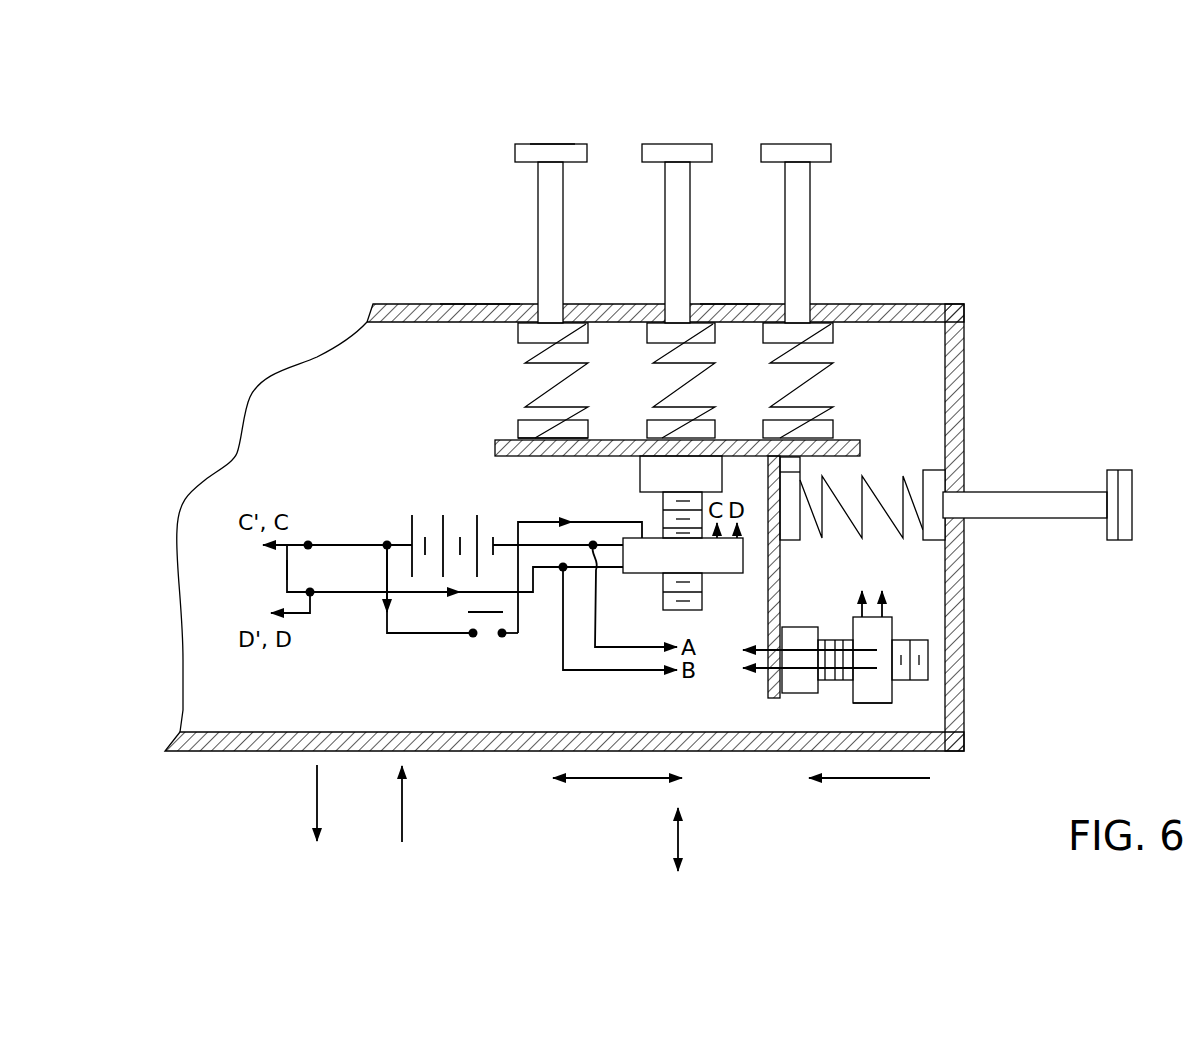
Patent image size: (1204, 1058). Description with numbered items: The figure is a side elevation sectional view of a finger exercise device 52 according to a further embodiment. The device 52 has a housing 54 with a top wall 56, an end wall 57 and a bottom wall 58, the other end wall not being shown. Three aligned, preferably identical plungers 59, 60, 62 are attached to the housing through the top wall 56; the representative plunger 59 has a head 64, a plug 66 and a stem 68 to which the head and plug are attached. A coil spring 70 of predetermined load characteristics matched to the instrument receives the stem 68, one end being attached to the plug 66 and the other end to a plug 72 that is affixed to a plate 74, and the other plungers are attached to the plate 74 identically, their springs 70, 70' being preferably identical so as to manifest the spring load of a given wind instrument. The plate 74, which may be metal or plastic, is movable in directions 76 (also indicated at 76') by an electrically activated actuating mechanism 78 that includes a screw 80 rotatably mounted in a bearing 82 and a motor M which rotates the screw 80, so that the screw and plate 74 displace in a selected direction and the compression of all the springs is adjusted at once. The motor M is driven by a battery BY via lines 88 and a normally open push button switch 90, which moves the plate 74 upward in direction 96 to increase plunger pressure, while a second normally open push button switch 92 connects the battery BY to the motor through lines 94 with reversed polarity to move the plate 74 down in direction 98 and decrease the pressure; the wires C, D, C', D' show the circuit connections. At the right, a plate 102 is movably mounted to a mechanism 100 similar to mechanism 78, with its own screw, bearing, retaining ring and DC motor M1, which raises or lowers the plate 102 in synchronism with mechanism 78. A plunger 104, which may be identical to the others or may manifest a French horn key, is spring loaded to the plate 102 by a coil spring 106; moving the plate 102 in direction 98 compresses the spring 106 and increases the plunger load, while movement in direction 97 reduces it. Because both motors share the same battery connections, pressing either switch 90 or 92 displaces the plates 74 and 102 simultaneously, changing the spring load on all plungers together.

The finger exercise device 52 is at (352, 258).
The housing 54 is at (880, 303).
The top wall 56 is at (740, 304).
The end wall 57 is at (964, 368).
The bottom wall 58 is at (713, 752).
The plunger 59 is at (555, 141).
The plunger 60 is at (683, 141).
The plunger 62 is at (810, 141).
The head 64 is at (515, 150).
The plug 66 is at (520, 304).
The stem 68 is at (538, 210).
The coil spring 70 is at (526, 380).
The coil spring 70' is at (659, 380).
The plug 72 is at (525, 425).
The plate 74 is at (496, 445).
The directions 76 is at (720, 839).
The directions 76' is at (617, 813).
The actuating mechanism 78 is at (604, 505).
The screw 80 is at (663, 507).
The bearing 82 is at (694, 486).
The lines 88 is at (540, 522).
The switch 90 is at (487, 612).
The push button switch 92 is at (287, 570).
The lines 94 is at (320, 541).
The direction 96 is at (402, 822).
The direction 97 is at (920, 780).
The direction 98 is at (317, 795).
The mechanism 100 is at (904, 622).
The plate 102 is at (782, 590).
The plunger 104 is at (1130, 478).
The coil spring 106 is at (867, 477).
The DC motor M1 is at (892, 690).
The battery BY is at (432, 515).